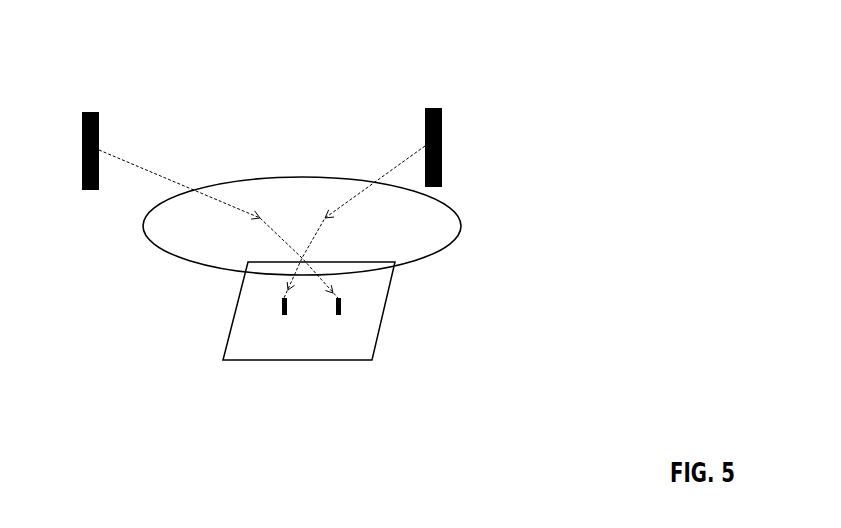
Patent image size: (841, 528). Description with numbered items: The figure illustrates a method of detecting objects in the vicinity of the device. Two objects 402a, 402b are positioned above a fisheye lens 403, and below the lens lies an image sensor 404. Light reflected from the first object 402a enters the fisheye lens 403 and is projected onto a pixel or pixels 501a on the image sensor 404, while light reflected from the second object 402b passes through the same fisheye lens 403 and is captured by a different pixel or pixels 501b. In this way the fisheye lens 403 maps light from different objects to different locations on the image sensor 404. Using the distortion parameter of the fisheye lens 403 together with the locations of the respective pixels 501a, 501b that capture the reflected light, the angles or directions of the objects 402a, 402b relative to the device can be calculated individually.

The object 402a is at (92, 112).
The object 402b is at (430, 108).
The fisheye lens 403 is at (142, 228).
The image sensor 404 is at (373, 341).
The pixel(s) 501a is at (340, 305).
The pixel(s) 501b is at (282, 305).